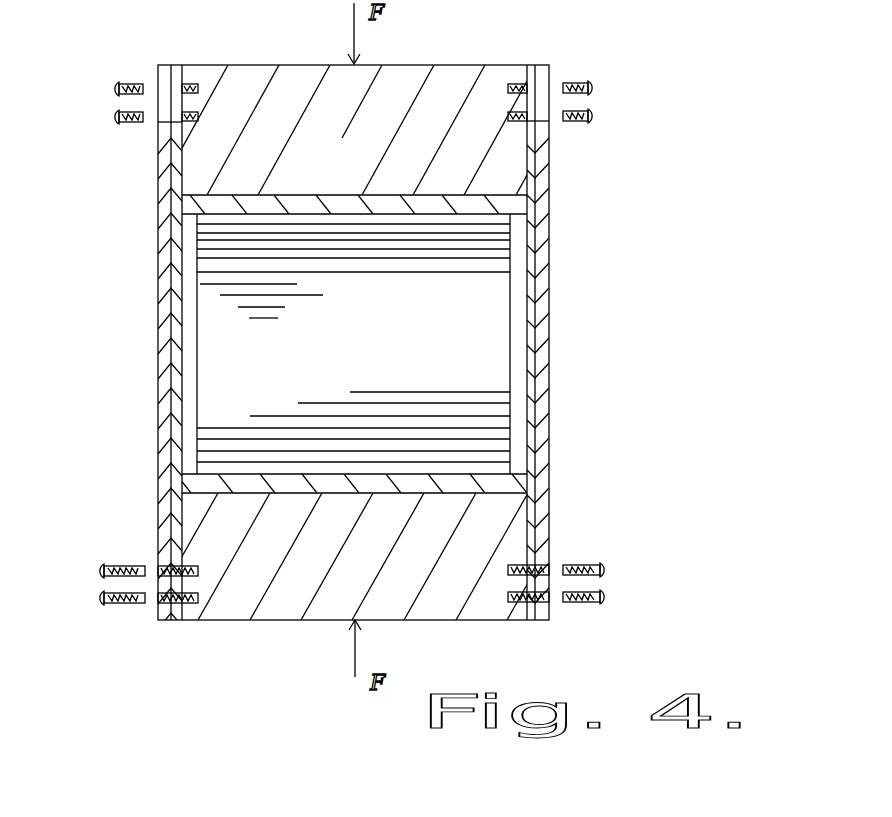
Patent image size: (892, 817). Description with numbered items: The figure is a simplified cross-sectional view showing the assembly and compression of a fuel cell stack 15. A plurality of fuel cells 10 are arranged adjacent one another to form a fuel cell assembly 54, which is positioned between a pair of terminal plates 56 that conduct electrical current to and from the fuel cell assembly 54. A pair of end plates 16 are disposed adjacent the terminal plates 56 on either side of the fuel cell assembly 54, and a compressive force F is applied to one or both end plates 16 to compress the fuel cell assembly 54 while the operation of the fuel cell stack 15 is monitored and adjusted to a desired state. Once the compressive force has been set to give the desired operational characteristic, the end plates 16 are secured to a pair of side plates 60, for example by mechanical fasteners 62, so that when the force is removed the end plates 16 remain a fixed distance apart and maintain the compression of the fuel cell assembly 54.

The fuel cell 10 is at (200, 231).
The fuel cell stack 15 is at (643, 94).
The end plate 16 is at (234, 82).
The fuel cell assembly 54 is at (437, 341).
The terminal plate 56 is at (309, 194).
The side plate 60 is at (549, 276).
The mechanical fastener 62 is at (126, 80).